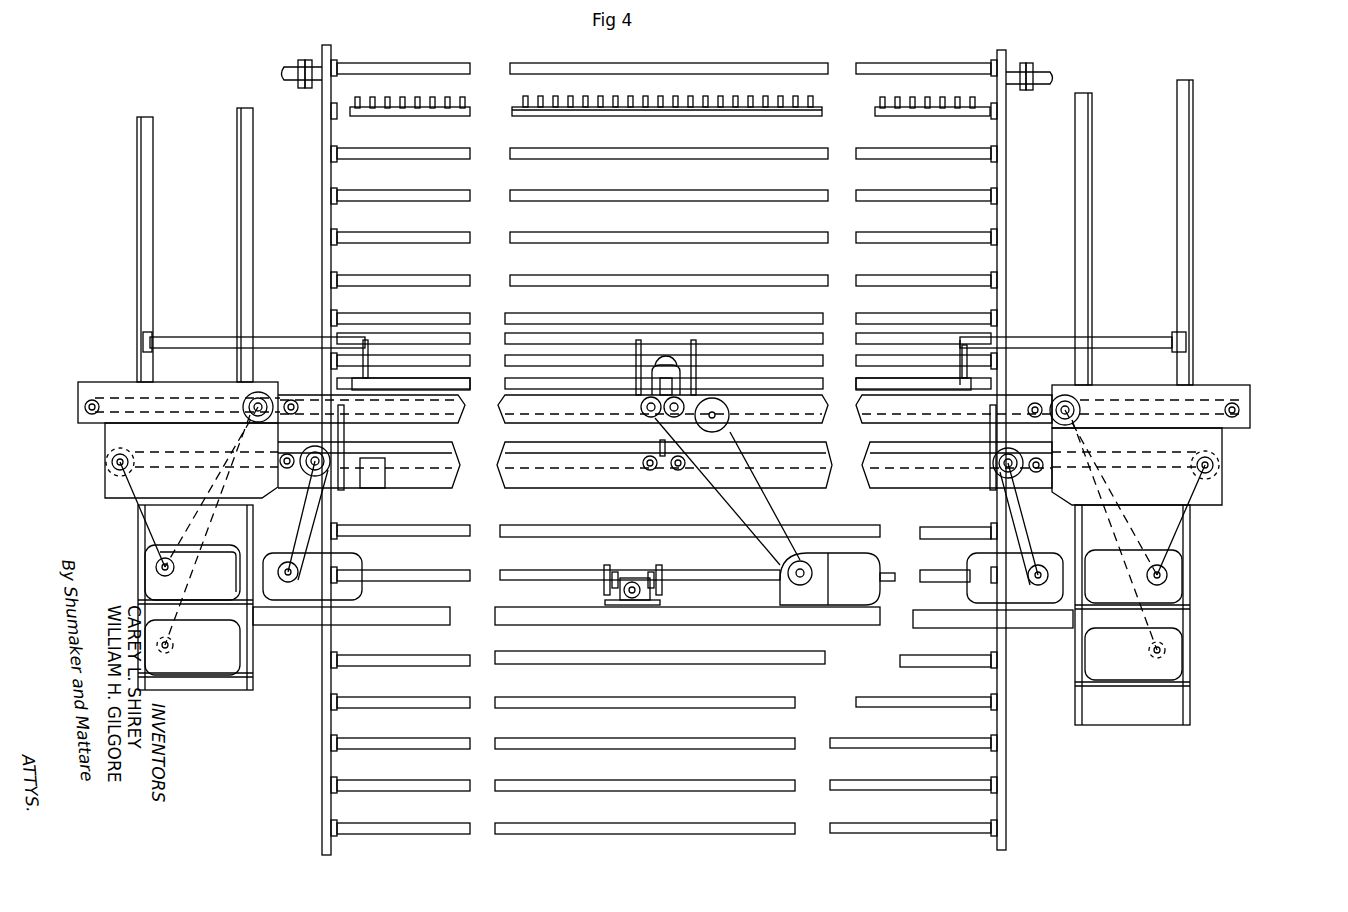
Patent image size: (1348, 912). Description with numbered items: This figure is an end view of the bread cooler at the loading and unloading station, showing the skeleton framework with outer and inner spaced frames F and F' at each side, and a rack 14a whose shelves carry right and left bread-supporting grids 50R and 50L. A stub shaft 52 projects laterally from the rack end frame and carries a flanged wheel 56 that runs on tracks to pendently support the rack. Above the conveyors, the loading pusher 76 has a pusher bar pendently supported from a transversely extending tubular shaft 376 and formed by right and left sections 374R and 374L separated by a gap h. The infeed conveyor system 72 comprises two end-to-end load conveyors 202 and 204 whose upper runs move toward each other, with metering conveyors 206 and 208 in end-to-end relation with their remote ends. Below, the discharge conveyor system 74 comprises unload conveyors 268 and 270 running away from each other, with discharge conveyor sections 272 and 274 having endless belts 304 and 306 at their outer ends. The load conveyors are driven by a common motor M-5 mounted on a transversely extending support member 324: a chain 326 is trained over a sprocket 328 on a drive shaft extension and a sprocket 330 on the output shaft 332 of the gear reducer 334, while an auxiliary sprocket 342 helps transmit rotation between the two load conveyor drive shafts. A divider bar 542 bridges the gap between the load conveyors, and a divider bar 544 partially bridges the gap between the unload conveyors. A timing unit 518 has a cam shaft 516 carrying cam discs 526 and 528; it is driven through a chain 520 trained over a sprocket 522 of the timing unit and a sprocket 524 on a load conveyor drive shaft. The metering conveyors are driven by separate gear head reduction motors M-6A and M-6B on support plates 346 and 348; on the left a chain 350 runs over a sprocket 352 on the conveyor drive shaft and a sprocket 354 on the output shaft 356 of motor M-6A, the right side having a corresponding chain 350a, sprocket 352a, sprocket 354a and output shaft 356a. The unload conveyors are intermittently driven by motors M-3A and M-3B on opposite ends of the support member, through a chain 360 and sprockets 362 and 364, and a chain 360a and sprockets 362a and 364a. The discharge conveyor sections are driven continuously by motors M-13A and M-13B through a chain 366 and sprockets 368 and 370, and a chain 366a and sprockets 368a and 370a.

The rack 14a is at (1006, 216).
The left grid 50L is at (453, 100).
The right grid 50R is at (822, 100).
The outer frame F is at (664, 232).
The inner frame F' is at (664, 239).
The stub shaft 52 is at (282, 66).
The flanged wheel 56 is at (303, 60).
The loading pusher 76 is at (1120, 340).
The tubular shaft 376 is at (1025, 337).
The left pusher bar section 374L is at (433, 378).
The right pusher bar section 374R is at (890, 378).
The metering conveyor 206 is at (165, 395).
The load conveyor 202 is at (553, 410).
The load conveyor 204 is at (949, 420).
The metering conveyor 208 is at (1125, 398).
The infeed conveyor system 72 is at (1210, 400).
The discharge conveyor section 272 is at (160, 452).
The unload conveyor 268 is at (555, 465).
The unload conveyor 270 is at (941, 465).
The discharge conveyor section 274 is at (1135, 472).
The sprocket 352 is at (262, 392).
The chain 350 is at (222, 436).
The sprocket 368 is at (107, 470).
The endless belt 304 is at (300, 452).
The sprocket 352a is at (1058, 394).
The chain 350a is at (1102, 440).
The sprocket 368a is at (1220, 468).
The discharge conveyor system 74 is at (1185, 455).
The endless belt 306 is at (1040, 458).
The sprocket 524 is at (646, 402).
The divider bar 542 is at (660, 380).
The gap h is at (665, 355).
The sprocket 328 is at (694, 395).
The auxiliary sprocket 342 is at (722, 420).
The divider bar 544 is at (662, 470).
The chain 520 is at (625, 575).
The sprocket 522 is at (630, 600).
The cam disc 526 is at (608, 566).
The cam shaft 516 is at (664, 578).
The timing unit 518 is at (642, 600).
The cam disc 528 is at (665, 590).
The motor M-5 is at (850, 605).
The sprocket 330 is at (820, 573).
The output shaft 332 is at (796, 575).
The gear reducer 334 is at (805, 605).
The chain 326 is at (775, 525).
The chain 366 is at (138, 510).
The gear head reduction motor M-6A is at (238, 575).
The output shaft 356 is at (175, 567).
The gear head reduction motor M-13A is at (225, 655).
The sprocket 370 is at (166, 655).
The sprocket 354 is at (165, 540).
The support plate 346 is at (240, 630).
The gear head reduction motor M-3A is at (362, 560).
The sprocket 364 is at (300, 575).
The sprocket 362 is at (330, 480).
The chain 360 is at (320, 520).
The chain 366a is at (1192, 516).
The gear head reduction motor M-6B is at (1175, 587).
The sprocket 354a is at (1170, 575).
The output shaft 356a is at (1160, 585).
The support plate 348 is at (1165, 610).
The gear head reduction motor M-13B is at (1178, 666).
The sprocket 370a is at (1152, 660).
The gear head reduction motor M-3B is at (990, 560).
The sprocket 364a is at (1028, 578).
The sprocket 362a is at (1000, 490).
The chain 360a is at (1040, 555).
The support member 324 is at (985, 620).